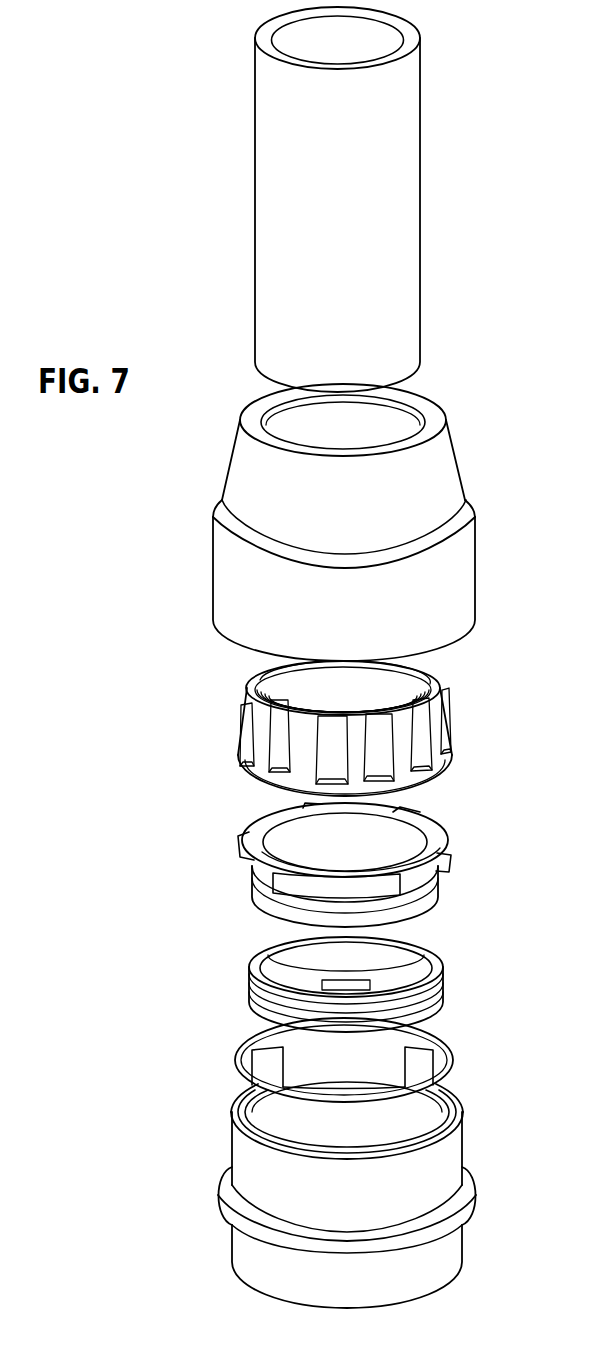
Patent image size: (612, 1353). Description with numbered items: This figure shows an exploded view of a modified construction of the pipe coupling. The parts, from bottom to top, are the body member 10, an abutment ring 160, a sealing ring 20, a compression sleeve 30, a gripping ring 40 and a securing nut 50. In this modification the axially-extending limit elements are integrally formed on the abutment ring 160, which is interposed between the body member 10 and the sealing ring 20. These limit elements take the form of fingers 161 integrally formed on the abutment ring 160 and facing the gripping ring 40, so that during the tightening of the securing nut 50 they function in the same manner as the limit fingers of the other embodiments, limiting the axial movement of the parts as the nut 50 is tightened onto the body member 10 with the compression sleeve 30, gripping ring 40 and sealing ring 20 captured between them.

The body member 10 is at (485, 1195).
The sealing ring 20 is at (455, 990).
The compression sleeve 30 is at (457, 840).
The gripping ring 40 is at (460, 722).
The securing nut 50 is at (460, 458).
The abutment ring 160 is at (335, 1070).
The fingers 161 is at (262, 1070).